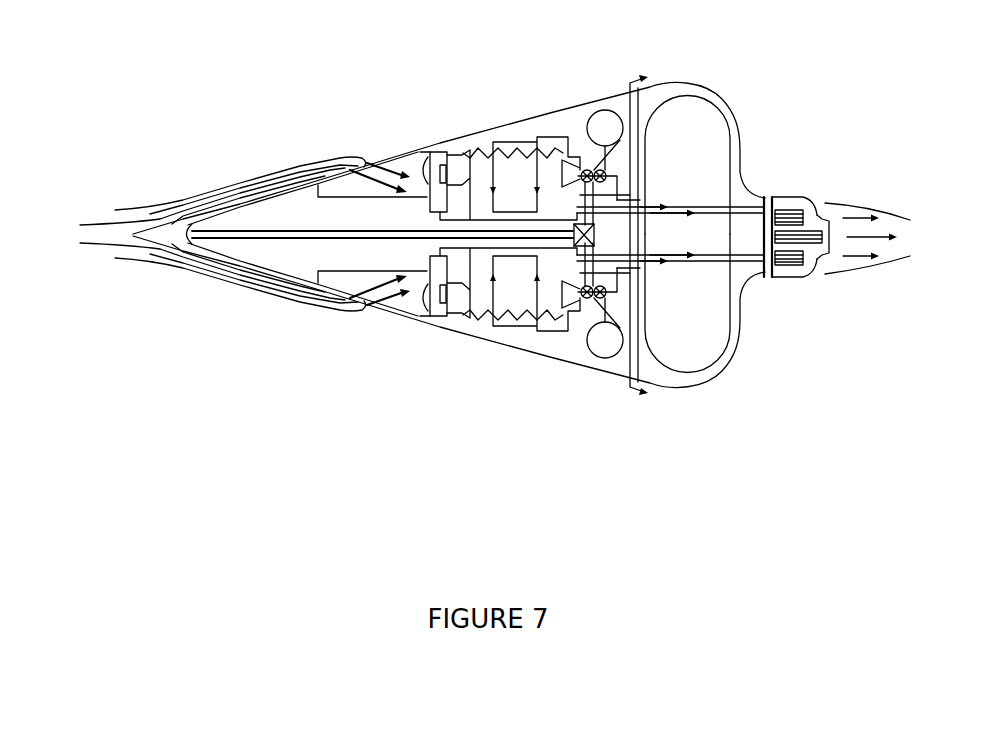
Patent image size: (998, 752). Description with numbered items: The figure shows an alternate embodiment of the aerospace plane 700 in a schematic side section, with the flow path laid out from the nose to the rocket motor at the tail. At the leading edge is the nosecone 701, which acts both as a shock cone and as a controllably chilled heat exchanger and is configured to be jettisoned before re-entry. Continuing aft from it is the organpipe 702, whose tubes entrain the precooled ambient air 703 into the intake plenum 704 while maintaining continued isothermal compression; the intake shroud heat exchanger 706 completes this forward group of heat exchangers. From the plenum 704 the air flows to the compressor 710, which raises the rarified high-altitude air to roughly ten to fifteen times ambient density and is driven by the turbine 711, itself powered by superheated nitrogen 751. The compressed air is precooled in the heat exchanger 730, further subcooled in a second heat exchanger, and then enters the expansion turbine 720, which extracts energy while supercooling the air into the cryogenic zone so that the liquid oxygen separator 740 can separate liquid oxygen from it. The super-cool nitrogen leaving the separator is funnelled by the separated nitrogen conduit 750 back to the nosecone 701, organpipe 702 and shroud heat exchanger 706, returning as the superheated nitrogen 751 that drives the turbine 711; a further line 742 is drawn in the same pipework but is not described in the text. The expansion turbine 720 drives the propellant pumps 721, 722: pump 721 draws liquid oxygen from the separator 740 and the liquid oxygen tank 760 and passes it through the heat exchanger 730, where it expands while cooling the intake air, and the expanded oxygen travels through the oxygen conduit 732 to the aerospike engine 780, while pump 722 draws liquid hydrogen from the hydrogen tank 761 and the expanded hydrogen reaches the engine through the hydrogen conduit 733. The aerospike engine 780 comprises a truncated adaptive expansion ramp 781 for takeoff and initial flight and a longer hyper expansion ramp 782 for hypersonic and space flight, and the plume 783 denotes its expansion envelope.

The hypersonic vehicle 700 is at (261, 86).
The nosecone 701 is at (258, 181).
The organpipe 702 is at (357, 168).
The precooled ambient air 703 is at (318, 162).
The intake plenum 704 is at (419, 148).
The intake shroud heat exchanger 706 is at (420, 152).
The compressor 710 is at (476, 150).
The turbine 711 is at (446, 164).
The expansion turbine 720 is at (585, 168).
The propellant pump 721 is at (647, 150).
The propellant pump 722 is at (660, 155).
The heat exchanger 730 is at (382, 225).
The oxygen conduit 732 is at (682, 205).
The hydrogen conduit 733 is at (711, 205).
The liquid oxygen separator 740 is at (601, 235).
The vent line 742 is at (645, 241).
The separated nitrogen conduit 750 is at (524, 51).
The superheated nitrogen 751 is at (553, 135).
The liquid oxygen tank 760 is at (609, 110).
The hydrogen tank 761 is at (712, 125).
The aerospike engine 780 is at (782, 197).
The truncated adaptive expansion ramp 781 is at (797, 213).
The hyper expansion ramp 782 is at (822, 220).
The plume 783 is at (870, 214).